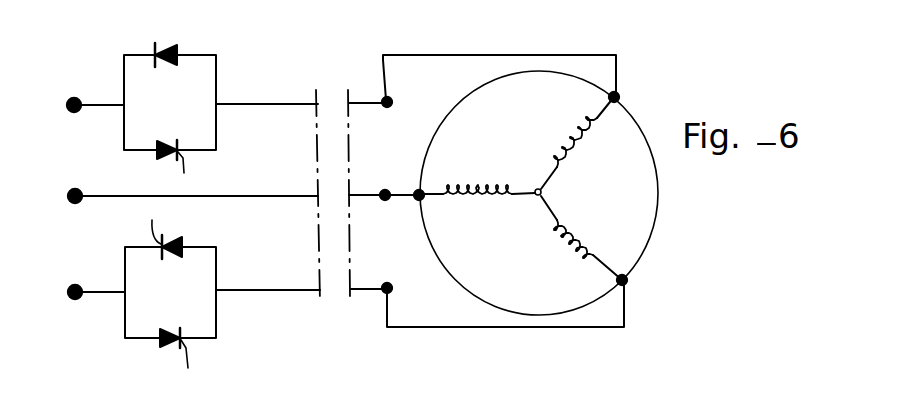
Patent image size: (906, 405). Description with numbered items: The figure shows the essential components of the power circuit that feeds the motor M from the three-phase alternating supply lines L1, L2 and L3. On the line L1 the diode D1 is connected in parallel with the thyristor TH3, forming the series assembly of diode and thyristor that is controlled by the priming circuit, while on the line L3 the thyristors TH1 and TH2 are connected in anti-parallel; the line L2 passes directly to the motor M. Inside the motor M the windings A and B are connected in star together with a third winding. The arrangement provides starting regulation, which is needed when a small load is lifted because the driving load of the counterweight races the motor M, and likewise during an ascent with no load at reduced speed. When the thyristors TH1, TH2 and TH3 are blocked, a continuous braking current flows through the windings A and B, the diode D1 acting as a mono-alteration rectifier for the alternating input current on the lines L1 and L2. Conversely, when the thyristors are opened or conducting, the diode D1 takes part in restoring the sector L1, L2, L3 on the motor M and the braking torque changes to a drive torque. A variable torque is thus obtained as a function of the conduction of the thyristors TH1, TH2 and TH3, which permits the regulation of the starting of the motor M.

The alternating input current line L1 is at (89, 91).
The alternating input current line L2 is at (189, 181).
The alternating input current line L3 is at (92, 274).
The diode D1 is at (161, 72).
The thyristor TH1 is at (162, 275).
The thyristor TH2 is at (200, 350).
The thyristor TH3 is at (199, 164).
The motor winding A is at (577, 152).
The motor winding B is at (468, 200).
The motor M is at (650, 200).